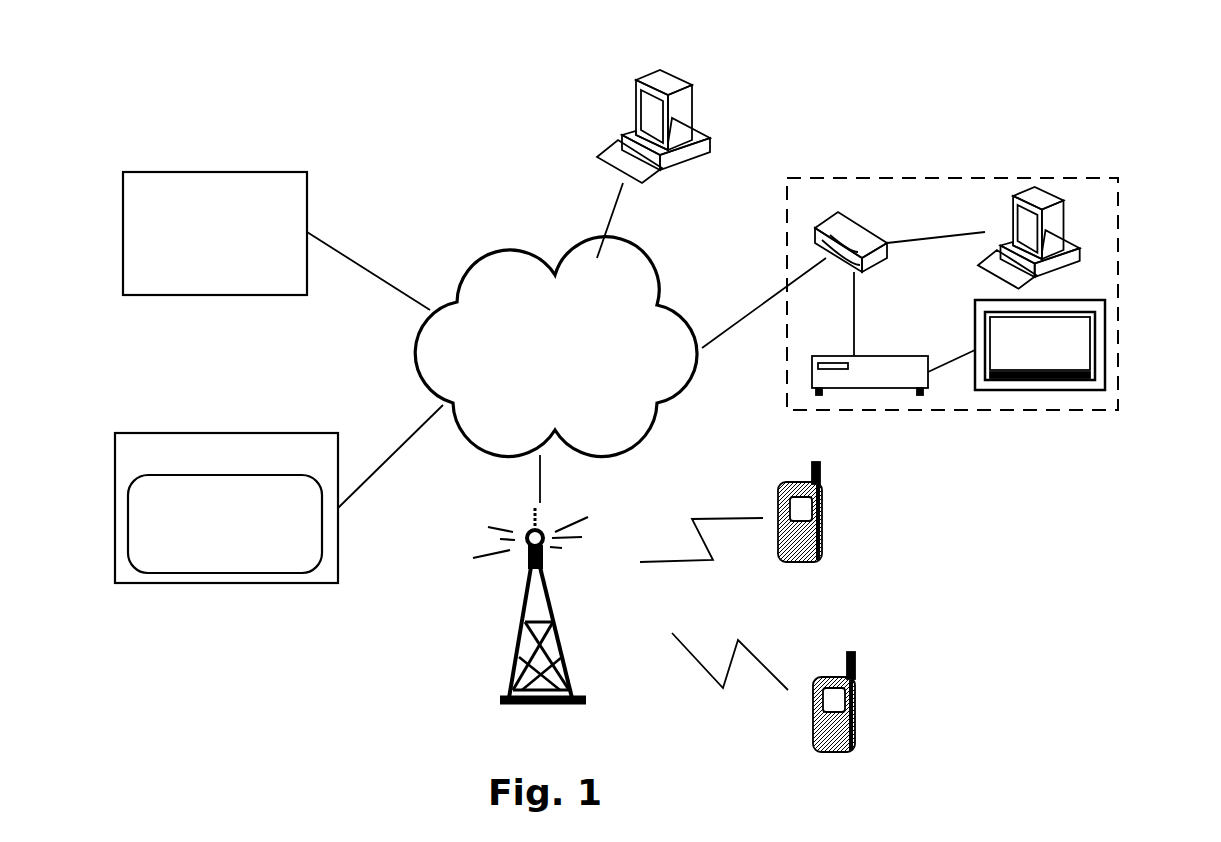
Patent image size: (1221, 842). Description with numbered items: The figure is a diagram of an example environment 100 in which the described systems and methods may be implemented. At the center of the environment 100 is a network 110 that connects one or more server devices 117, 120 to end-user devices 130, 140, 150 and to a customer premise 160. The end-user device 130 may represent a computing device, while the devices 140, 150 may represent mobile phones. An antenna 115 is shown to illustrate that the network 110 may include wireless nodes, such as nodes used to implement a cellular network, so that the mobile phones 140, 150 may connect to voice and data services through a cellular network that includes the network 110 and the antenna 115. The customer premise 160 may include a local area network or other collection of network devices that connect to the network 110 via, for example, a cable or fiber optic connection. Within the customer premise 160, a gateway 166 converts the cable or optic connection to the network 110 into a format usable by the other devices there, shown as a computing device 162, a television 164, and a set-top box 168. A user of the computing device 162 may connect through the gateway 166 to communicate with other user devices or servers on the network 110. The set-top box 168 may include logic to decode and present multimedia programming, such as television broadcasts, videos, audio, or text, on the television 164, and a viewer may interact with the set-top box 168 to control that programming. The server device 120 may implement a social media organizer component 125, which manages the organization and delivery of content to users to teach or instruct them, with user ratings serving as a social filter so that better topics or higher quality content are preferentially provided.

The environment 100 is at (213, 76).
The network 110 is at (556, 347).
The antenna 115 is at (555, 596).
The server device 117 is at (289, 172).
The server device 120 is at (347, 418).
The social media organizer component 125 is at (322, 547).
The end-user device 130 is at (703, 100).
The mobile phone 140 is at (823, 512).
The mobile phone 150 is at (857, 698).
The customer premise 160 is at (1110, 180).
The computing device 162 is at (1082, 236).
The television 164 is at (1105, 327).
The gateway 166 is at (875, 242).
The set-top box 168 is at (897, 356).